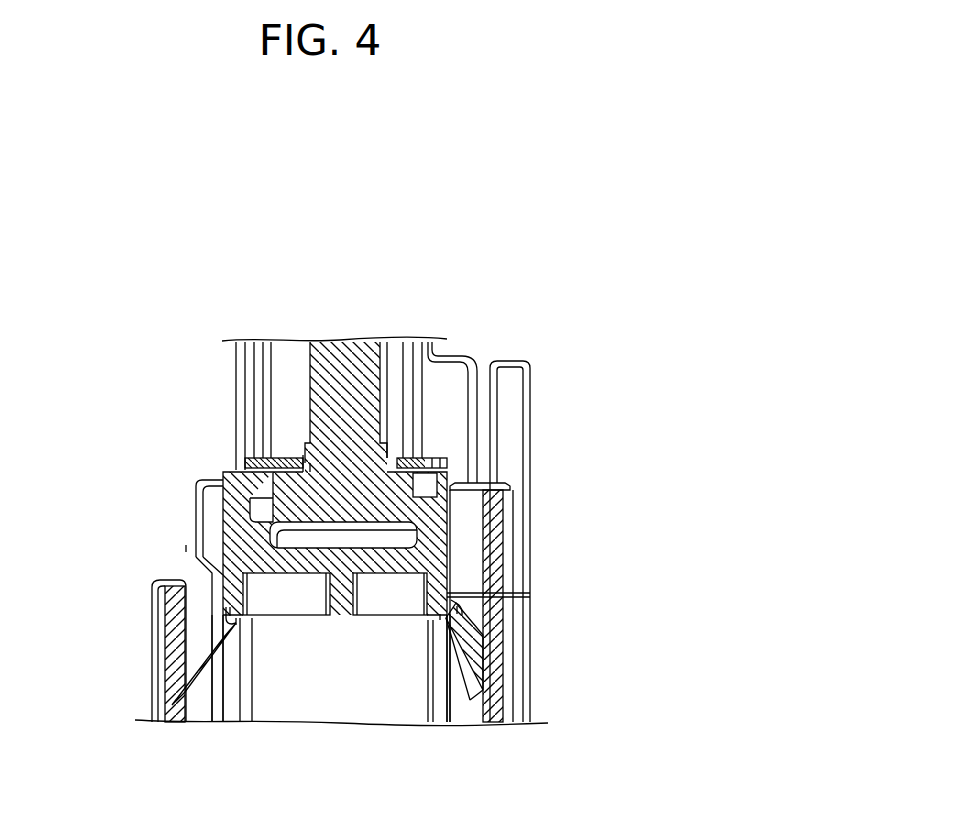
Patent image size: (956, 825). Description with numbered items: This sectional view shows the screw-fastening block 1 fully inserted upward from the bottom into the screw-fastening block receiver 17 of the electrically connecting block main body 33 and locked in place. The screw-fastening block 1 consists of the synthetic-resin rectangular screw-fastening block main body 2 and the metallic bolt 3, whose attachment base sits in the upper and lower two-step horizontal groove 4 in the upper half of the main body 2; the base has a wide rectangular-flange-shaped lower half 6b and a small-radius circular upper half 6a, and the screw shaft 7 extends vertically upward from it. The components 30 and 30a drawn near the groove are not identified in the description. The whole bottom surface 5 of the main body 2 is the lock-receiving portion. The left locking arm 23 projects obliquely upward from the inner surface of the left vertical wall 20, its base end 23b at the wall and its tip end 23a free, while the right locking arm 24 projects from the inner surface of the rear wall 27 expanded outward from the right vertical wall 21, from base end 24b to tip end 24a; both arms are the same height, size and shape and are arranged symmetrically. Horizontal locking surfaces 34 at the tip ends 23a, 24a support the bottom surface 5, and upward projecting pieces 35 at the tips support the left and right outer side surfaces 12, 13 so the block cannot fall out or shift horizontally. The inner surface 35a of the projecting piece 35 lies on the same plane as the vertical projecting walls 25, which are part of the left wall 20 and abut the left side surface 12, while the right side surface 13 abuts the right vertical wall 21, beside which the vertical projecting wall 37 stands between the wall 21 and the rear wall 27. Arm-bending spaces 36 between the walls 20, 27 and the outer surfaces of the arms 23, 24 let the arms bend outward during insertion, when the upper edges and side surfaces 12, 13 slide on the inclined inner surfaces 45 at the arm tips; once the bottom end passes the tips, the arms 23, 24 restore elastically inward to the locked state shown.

The screw-fastening block 1 is at (344, 620).
The screw-fastening block main body 2 is at (452, 557).
The bolt 3 is at (389, 383).
The horizontal groove 4 is at (245, 500).
The bottom surface 5 is at (243, 622).
The upper half of attachment base 6a is at (223, 473).
The lower half of attachment base 6b is at (250, 538).
The screw shaft 7 is at (308, 383).
The left outer side surface 12 is at (503, 594).
The right outer side surface 13 is at (178, 567).
The screw-fastening block receiver 17 is at (190, 548).
The left vertical wall 20 is at (497, 580).
The right vertical wall 21 is at (193, 530).
The left locking arm 23 is at (462, 683).
The tip end of left locking arm 23a is at (436, 655).
The base end of left locking arm 23b is at (470, 698).
The right locking arm 24 is at (203, 682).
The tip end of right locking arm 24a is at (215, 665).
The base end of right locking arm 24b is at (195, 690).
The vertical projecting walls 25 is at (470, 528).
The rear wall 27 is at (190, 633).
The plate 30 is at (258, 456).
The protrusion 30a is at (300, 457).
The electrically connecting block main body 33 is at (553, 410).
The locking surfaces 34 is at (233, 626).
The upward projecting pieces 35 is at (222, 619).
The inner surface of upward projecting piece 35a is at (187, 603).
The arm-bending spaces 36 is at (477, 660).
The vertical projecting wall 37 is at (185, 655).
The inclined inner surfaces 45 is at (234, 622).